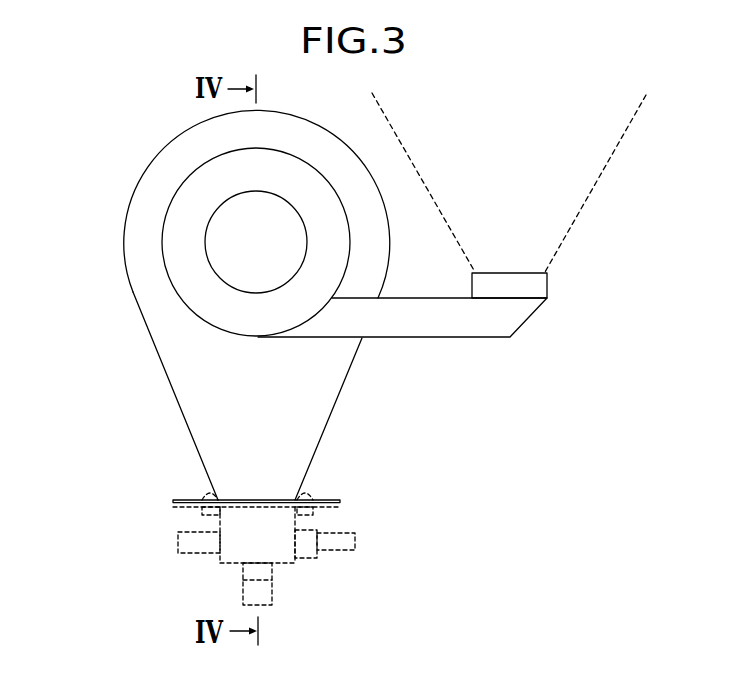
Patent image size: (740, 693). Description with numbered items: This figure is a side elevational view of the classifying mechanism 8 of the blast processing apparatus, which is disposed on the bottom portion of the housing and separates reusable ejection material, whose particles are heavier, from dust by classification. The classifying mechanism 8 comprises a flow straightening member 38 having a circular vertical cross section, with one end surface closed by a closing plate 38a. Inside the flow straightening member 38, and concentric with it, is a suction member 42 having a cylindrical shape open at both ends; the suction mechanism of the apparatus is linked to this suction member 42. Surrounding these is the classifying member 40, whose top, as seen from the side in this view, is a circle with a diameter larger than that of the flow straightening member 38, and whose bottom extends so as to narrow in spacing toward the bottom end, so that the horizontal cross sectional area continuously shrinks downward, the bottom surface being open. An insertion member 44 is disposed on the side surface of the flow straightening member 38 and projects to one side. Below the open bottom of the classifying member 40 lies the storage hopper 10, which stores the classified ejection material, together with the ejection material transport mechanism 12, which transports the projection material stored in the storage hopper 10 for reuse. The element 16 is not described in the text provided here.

The classifying mechanism 8 is at (120, 163).
The flow straightening member 38 is at (173, 290).
The closing plate 38a is at (178, 237).
The suction member 42 is at (273, 290).
The classifying member 40 is at (163, 367).
The insertion member 44 is at (518, 318).
The light beam 16 is at (605, 172).
The storage hopper 10 is at (287, 563).
The ejection material transport mechanism 12 is at (327, 564).